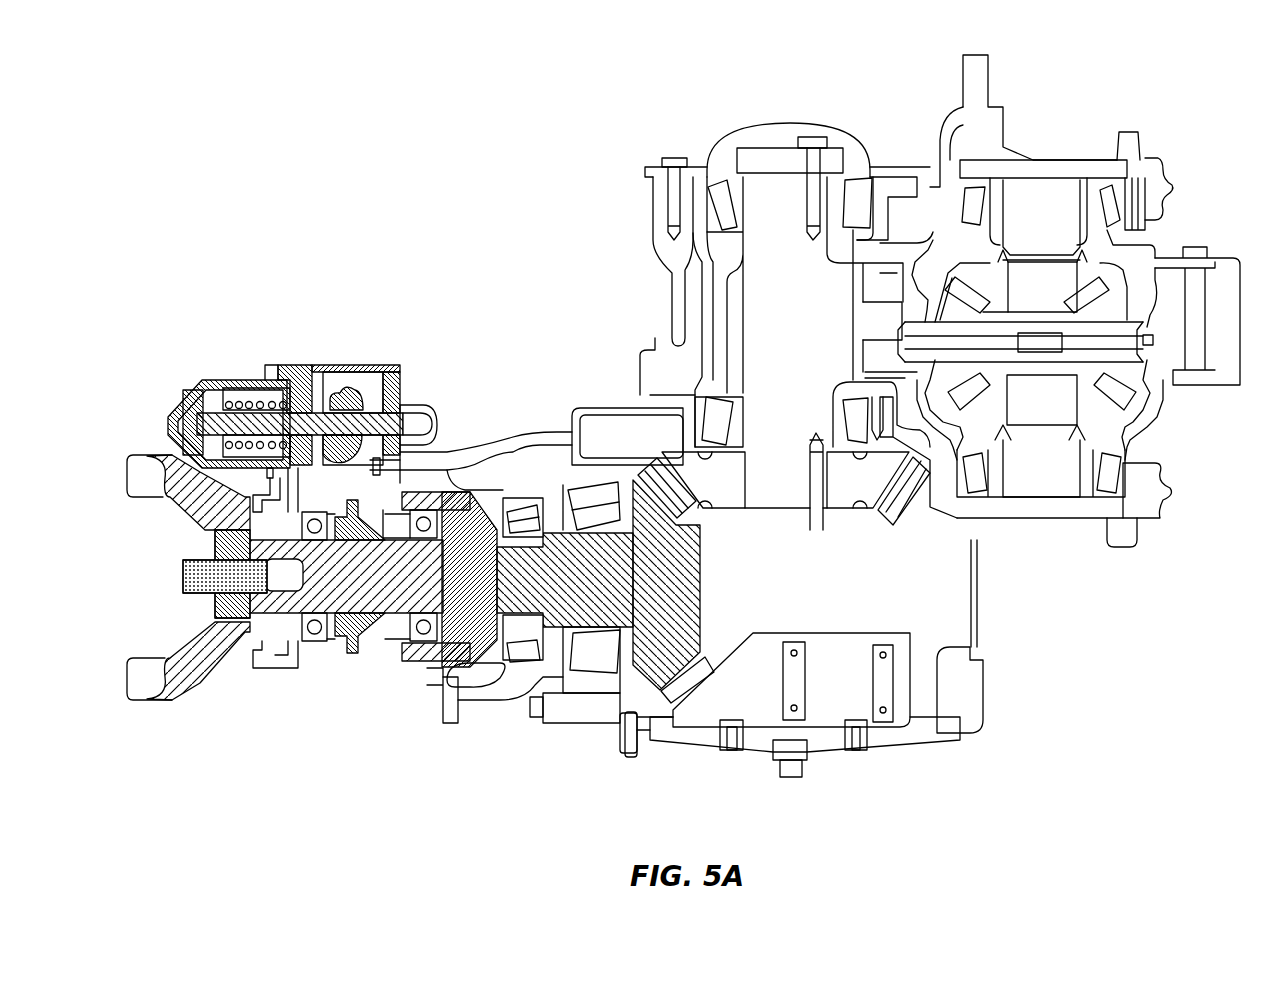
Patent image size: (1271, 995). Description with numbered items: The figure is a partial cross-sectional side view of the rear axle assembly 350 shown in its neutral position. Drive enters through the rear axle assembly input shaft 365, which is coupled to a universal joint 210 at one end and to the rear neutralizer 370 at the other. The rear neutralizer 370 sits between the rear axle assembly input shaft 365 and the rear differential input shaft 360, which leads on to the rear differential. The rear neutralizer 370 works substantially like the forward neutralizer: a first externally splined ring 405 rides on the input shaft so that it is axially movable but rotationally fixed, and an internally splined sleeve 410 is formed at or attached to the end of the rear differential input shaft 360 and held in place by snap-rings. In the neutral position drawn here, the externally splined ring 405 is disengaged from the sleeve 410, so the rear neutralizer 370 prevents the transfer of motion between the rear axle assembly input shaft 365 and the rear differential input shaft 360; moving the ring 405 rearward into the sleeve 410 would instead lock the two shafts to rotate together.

The rear axle assembly 350 is at (372, 95).
The rear neutralizer 370 is at (240, 325).
The rear differential input shaft 360 is at (573, 557).
The internally splined sleeve 410 is at (470, 492).
The rear axle assembly input shaft 365 is at (327, 643).
The first externally splined ring 405 is at (373, 653).
The universal joint 210 is at (163, 693).